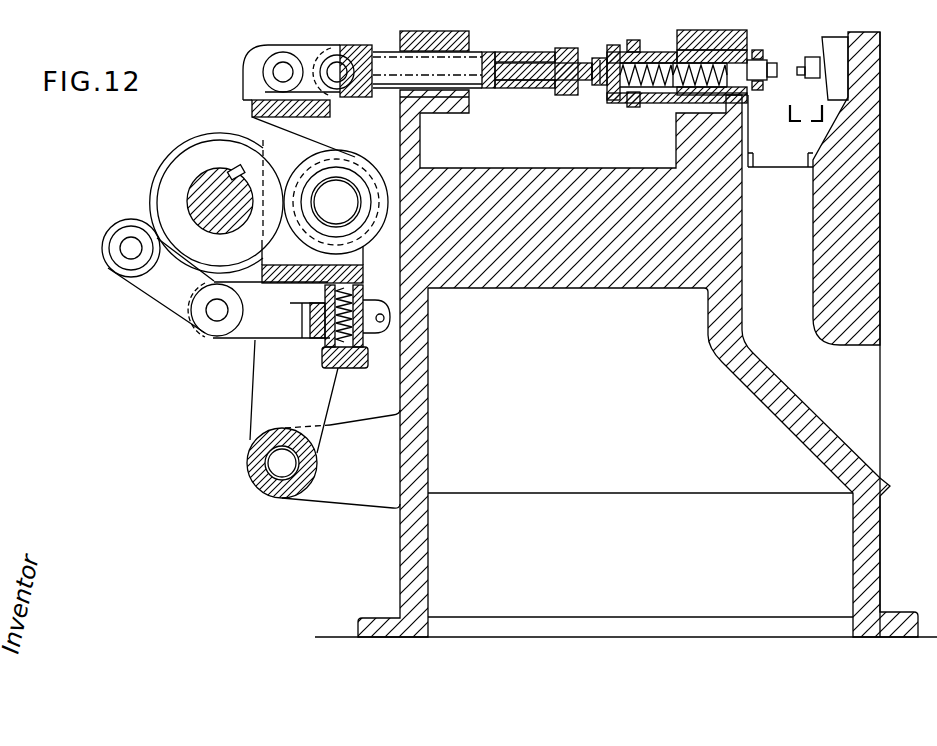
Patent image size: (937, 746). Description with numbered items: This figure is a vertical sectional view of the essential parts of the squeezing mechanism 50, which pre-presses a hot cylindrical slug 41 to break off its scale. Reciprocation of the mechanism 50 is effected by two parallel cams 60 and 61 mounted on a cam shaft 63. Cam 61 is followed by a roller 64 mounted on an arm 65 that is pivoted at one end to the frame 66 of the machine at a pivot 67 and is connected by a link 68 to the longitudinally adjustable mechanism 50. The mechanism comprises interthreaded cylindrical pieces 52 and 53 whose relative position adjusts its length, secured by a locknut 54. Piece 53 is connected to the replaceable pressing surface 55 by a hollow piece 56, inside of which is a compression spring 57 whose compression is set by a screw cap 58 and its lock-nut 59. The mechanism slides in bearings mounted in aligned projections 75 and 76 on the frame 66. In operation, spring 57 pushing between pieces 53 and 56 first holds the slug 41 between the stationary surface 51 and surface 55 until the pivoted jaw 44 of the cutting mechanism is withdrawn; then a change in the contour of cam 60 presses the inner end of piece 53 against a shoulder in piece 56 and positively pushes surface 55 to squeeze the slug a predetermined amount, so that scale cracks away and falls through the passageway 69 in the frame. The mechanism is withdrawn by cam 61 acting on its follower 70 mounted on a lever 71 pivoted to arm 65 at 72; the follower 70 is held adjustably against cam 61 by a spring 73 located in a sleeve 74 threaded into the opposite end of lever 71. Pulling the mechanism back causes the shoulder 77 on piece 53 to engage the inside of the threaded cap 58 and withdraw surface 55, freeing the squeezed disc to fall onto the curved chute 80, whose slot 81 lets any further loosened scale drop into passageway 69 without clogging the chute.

The cylindrical slug 41 is at (796, 75).
The pivoted jaw 44 is at (810, 79).
The squeezing mechanism 50 is at (637, 54).
The stationary surface 51 is at (826, 38).
The interthreaded cylindrical piece 52 is at (496, 90).
The interthreaded cylindrical piece 53 is at (589, 88).
The locknut 54 is at (562, 96).
The replaceable pressing surface 55 is at (770, 64).
The hollow piece 56 is at (675, 60).
The compression spring 57 is at (650, 88).
The screw cap 58 is at (617, 100).
The lock-nut 59 is at (636, 107).
The cam 60 is at (158, 185).
The cam 61 is at (172, 151).
The cam shaft 63 is at (216, 171).
The roller 64 is at (356, 164).
The arm 65 is at (256, 382).
The frame 66 is at (433, 377).
The pivot 67 is at (278, 480).
The link 68 is at (310, 62).
The passageway 69 is at (773, 247).
The cam follower 70 is at (125, 228).
The lever 71 is at (161, 296).
The pivot 72 is at (216, 321).
The spring 73 is at (339, 356).
The sleeve 74 is at (366, 347).
The projection 75 is at (400, 38).
The projection 76 is at (747, 44).
The shoulder 77 is at (604, 96).
The chute 80 is at (790, 121).
The slot 81 is at (808, 122).